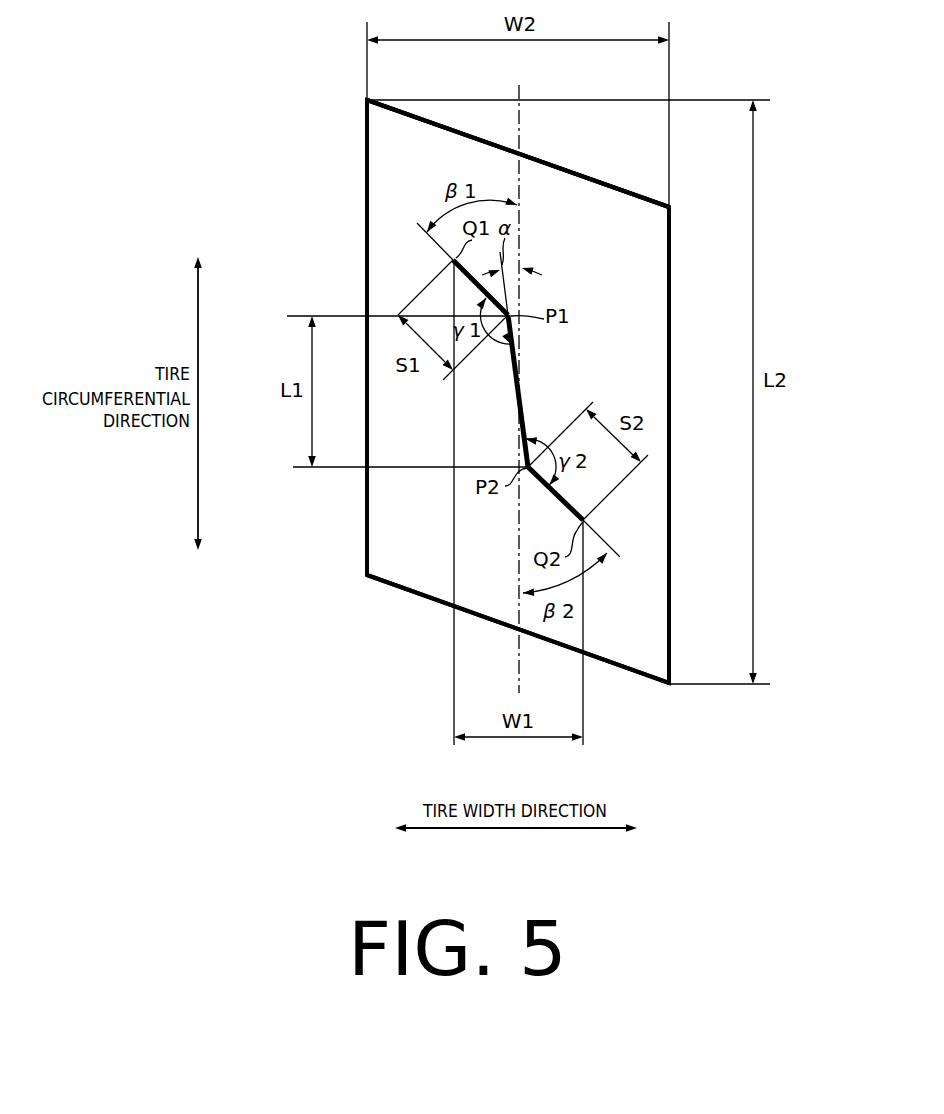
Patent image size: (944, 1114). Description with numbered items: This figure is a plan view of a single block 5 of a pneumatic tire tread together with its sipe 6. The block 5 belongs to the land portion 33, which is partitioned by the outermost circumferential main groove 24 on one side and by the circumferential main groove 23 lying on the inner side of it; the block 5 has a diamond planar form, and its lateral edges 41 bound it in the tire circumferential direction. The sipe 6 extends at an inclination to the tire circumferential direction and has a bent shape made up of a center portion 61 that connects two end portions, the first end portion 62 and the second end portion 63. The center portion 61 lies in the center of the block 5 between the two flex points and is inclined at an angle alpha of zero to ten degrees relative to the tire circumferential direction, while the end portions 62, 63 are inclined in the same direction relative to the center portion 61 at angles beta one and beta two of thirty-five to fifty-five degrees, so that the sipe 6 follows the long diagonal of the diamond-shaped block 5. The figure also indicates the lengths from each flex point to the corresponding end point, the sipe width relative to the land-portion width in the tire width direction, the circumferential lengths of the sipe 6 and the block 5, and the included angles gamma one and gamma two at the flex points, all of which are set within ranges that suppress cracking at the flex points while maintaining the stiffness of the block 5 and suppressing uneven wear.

The block 5 is at (671, 247).
The sipe 6 is at (554, 390).
The circumferential main groove 23 is at (694, 360).
The outermost circumferential main groove 24 is at (340, 233).
The land portion 33 is at (546, 134).
The lateral groove edge 41 is at (618, 170).
The center portion 61 is at (522, 382).
The first end portion 62 is at (490, 293).
The second end portion 63 is at (578, 508).